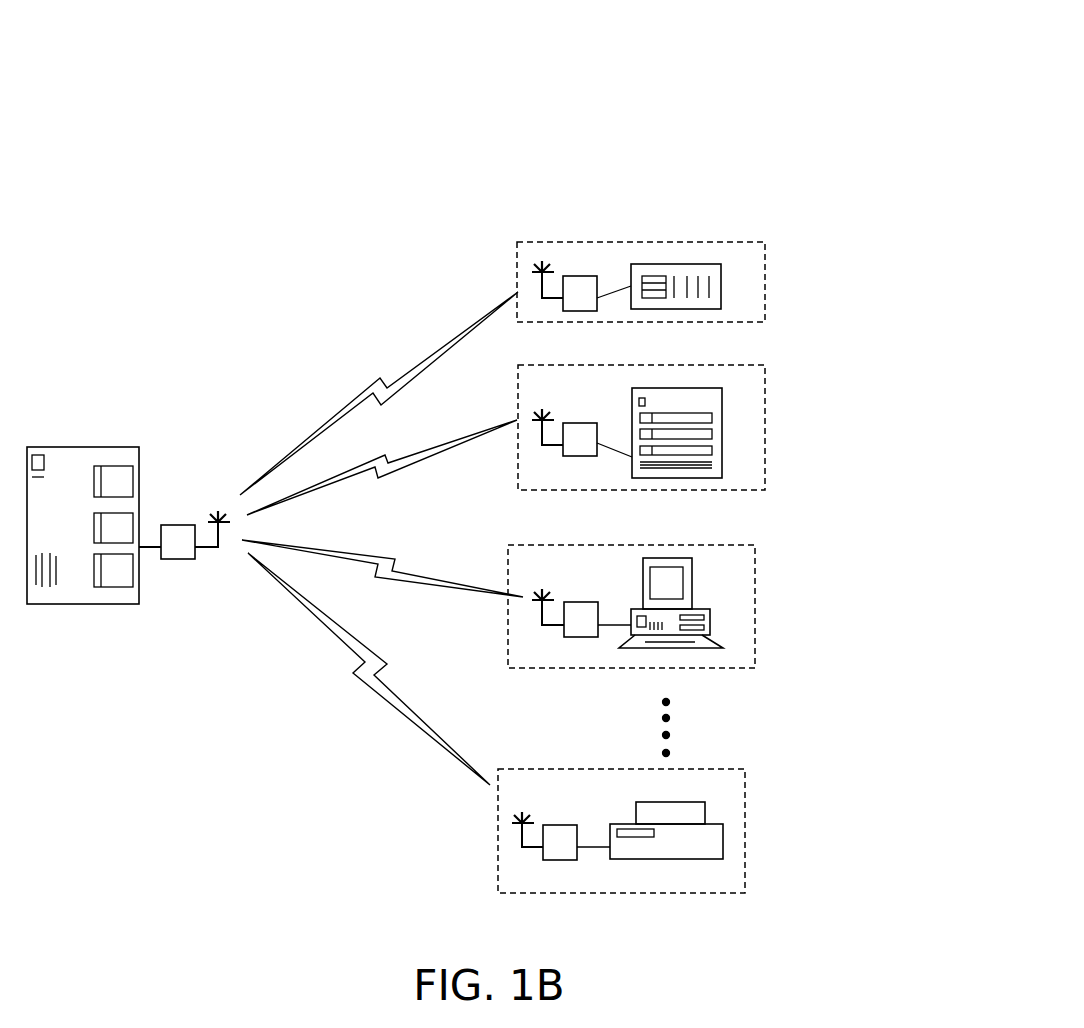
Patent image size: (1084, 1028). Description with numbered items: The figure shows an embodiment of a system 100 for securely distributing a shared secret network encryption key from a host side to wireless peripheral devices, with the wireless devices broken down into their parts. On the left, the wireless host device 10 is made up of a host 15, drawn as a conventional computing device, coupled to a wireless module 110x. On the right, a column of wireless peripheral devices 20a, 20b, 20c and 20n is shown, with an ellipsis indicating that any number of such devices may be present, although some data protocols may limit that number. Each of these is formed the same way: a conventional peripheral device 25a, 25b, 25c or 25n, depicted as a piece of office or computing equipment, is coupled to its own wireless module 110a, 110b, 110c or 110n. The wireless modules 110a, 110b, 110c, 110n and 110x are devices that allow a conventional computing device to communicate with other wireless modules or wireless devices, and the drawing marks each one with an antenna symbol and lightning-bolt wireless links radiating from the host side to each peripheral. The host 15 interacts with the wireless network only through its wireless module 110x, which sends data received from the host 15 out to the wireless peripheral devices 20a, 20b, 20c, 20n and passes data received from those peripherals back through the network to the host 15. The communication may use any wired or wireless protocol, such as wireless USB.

The system 100 is at (782, 52).
The wireless host device 10 is at (38, 627).
The host 15 is at (77, 442).
The wireless module 110x is at (178, 517).
The wireless peripheral device 20a is at (664, 263).
The wireless module 110a is at (557, 260).
The peripheral device 25a is at (728, 270).
The wireless peripheral device 20b is at (665, 432).
The wireless module 110b is at (580, 440).
The peripheral device 25b is at (728, 428).
The wireless peripheral device 20c is at (655, 606).
The wireless module 110c is at (555, 593).
The peripheral device 25c is at (718, 628).
The wireless peripheral device 20n is at (650, 828).
The wireless module 110n is at (548, 820).
The peripheral device 25n is at (718, 843).